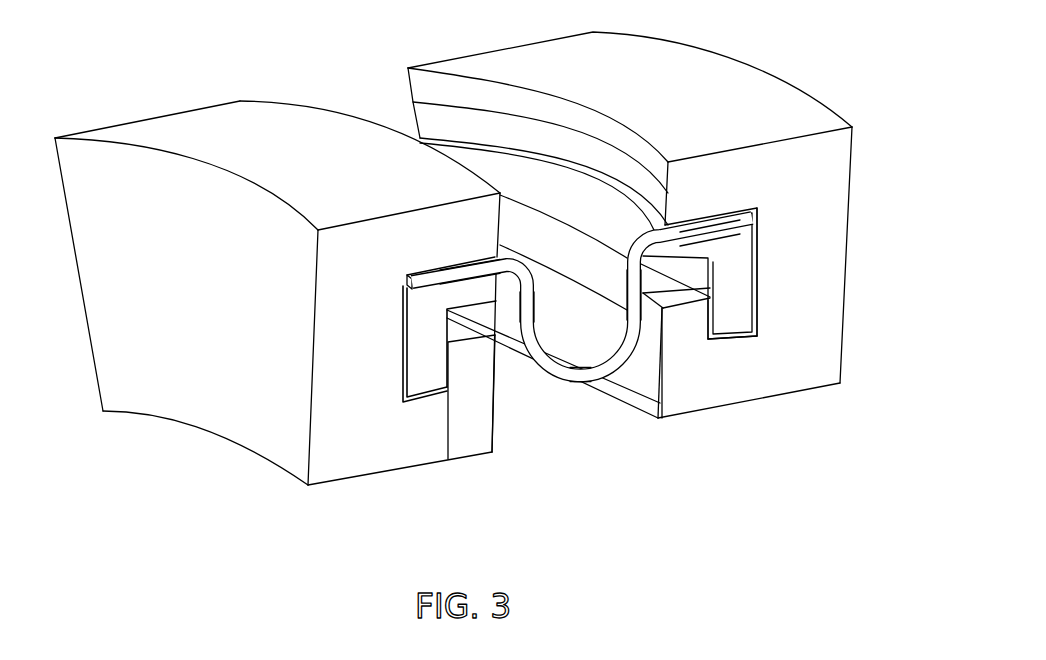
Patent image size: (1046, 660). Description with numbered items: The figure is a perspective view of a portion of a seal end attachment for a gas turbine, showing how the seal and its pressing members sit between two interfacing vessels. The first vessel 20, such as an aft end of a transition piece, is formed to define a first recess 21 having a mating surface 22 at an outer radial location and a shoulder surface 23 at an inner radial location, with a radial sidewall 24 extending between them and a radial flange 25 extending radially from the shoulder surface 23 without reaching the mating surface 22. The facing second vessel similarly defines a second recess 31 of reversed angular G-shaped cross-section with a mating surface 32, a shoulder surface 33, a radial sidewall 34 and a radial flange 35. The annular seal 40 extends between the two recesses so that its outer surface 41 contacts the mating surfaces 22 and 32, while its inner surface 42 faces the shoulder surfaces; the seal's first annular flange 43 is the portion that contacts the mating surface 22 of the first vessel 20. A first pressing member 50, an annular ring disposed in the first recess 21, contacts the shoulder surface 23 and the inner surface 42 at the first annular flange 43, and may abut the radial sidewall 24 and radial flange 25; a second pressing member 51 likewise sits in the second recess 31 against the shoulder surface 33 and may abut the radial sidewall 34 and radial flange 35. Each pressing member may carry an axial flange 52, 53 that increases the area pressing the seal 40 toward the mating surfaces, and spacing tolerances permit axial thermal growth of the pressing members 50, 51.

The first vessel 20 is at (118, 305).
The first recess 21 is at (478, 334).
The mating surface 22 is at (455, 263).
The shoulder surface 23 is at (434, 398).
The radial sidewall 24 is at (402, 392).
The radial flange 25 is at (488, 378).
The second recess 31 is at (680, 295).
The mating surface 32 is at (703, 205).
The shoulder surface 33 is at (744, 342).
The radial sidewall 34 is at (756, 306).
The radial flange 35 is at (698, 363).
The seal 40 is at (580, 373).
The outer surface 41 is at (557, 363).
The inner surface 42 is at (561, 383).
The first annular flange 43 is at (785, 109).
The first pressing member 50 is at (428, 372).
The second pressing member 51 is at (725, 303).
The axial flange 52 is at (496, 290).
The axial flange 53 is at (638, 238).